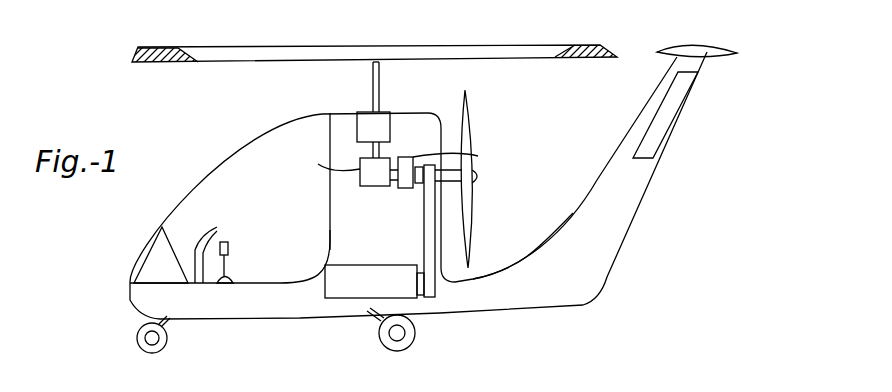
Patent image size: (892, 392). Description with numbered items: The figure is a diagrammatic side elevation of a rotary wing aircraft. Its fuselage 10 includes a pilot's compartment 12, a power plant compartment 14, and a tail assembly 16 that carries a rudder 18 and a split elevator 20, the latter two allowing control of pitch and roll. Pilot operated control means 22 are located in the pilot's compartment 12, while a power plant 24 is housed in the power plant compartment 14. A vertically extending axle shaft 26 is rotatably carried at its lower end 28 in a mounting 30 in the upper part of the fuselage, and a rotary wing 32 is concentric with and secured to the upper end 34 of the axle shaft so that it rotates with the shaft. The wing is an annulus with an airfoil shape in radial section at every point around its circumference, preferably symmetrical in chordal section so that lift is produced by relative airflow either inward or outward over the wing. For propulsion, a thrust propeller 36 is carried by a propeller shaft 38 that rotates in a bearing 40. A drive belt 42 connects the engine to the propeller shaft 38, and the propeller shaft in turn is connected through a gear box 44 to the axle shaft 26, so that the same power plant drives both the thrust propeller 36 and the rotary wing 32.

The fuselage 10 is at (230, 323).
The pilot's compartment 12 is at (198, 190).
The power plant compartment 14 is at (340, 238).
The tail assembly 16 is at (612, 280).
The rudder 18 is at (670, 122).
The split elevator 20 is at (757, 22).
The pilot operated control means 22 is at (217, 227).
The power plant 24 is at (353, 288).
The axle shaft 26 is at (372, 78).
The lower end of axle shaft 28 is at (379, 100).
The mounting 30 is at (382, 130).
The rotary wing 32 is at (497, 18).
The upper end of axle shaft 34 is at (437, 37).
The thrust propeller 36 is at (468, 128).
The propeller shaft 38 is at (453, 181).
The bearing 40 is at (413, 192).
The drive belt 42 is at (430, 240).
The gear box 44 is at (360, 170).